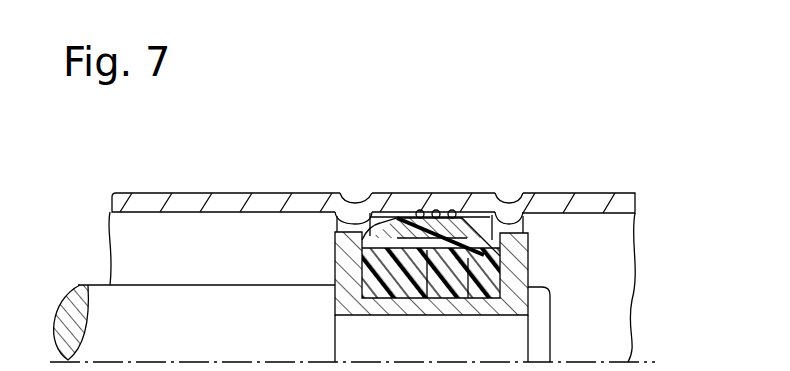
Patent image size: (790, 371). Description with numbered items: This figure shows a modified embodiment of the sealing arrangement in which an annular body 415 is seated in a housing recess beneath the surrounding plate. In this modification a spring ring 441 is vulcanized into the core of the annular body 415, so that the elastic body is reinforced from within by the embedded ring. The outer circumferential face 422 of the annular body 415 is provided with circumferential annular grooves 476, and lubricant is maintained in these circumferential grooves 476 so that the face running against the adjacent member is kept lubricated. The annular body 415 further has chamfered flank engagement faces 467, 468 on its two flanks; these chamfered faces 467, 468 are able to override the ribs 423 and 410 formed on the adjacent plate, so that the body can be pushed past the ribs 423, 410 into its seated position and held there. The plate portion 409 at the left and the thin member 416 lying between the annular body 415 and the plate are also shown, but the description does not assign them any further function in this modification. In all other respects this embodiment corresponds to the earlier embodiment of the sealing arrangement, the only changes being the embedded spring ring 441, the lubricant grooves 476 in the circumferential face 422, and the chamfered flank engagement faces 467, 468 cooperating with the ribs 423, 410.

The flexible plate 409 is at (207, 193).
The rib 410 is at (508, 194).
The annular body 415 is at (505, 250).
The membrane 416 is at (403, 213).
The circumferential face 422 is at (455, 210).
The rib 423 is at (322, 208).
The spring ring 441 is at (425, 275).
The chamfered flank engagement face 467 is at (368, 196).
The chamfered flank engagement face 468 is at (503, 210).
The circumferential annular grooves 476 is at (442, 210).